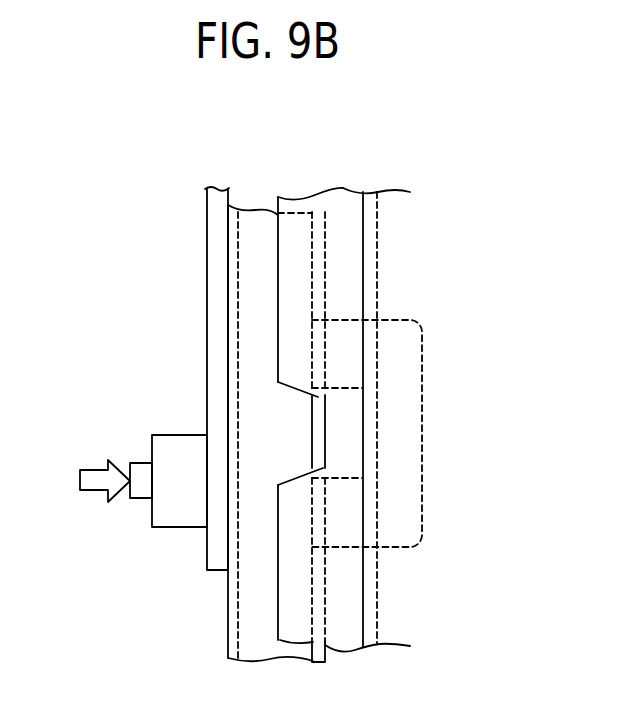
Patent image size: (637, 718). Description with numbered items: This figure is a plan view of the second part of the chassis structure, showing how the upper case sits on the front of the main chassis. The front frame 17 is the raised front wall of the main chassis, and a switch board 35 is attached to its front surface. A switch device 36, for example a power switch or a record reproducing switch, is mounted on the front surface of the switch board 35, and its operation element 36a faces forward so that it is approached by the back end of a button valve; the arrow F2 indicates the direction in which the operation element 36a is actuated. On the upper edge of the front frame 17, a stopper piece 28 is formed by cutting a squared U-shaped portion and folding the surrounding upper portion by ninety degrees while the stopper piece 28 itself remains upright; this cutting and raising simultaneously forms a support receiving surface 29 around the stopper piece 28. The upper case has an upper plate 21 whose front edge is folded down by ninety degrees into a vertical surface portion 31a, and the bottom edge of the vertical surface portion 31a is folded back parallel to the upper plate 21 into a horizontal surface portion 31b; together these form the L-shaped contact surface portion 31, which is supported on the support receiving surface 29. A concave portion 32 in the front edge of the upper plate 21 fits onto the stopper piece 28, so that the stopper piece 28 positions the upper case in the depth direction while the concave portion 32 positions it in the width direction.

The front frame 17 is at (228, 625).
The upper plate 21 is at (397, 208).
The stopper piece 28 is at (313, 435).
The support receiving surface 29 is at (423, 432).
The contact surface portion 31 is at (392, 128).
The vertical surface portion 31a is at (348, 213).
The horizontal surface portion 31b is at (368, 223).
The concave portion 32 is at (320, 399).
The switch board 35 is at (213, 221).
The switch device 36 is at (172, 518).
The operation element 36a is at (140, 493).
The pressing force F2 is at (89, 481).